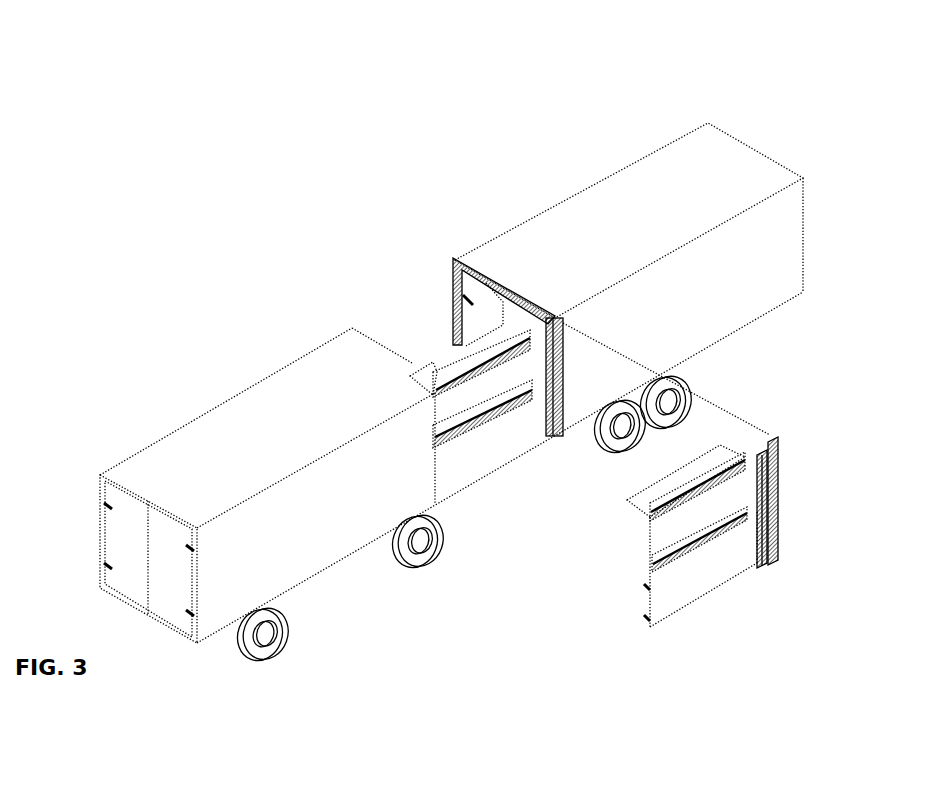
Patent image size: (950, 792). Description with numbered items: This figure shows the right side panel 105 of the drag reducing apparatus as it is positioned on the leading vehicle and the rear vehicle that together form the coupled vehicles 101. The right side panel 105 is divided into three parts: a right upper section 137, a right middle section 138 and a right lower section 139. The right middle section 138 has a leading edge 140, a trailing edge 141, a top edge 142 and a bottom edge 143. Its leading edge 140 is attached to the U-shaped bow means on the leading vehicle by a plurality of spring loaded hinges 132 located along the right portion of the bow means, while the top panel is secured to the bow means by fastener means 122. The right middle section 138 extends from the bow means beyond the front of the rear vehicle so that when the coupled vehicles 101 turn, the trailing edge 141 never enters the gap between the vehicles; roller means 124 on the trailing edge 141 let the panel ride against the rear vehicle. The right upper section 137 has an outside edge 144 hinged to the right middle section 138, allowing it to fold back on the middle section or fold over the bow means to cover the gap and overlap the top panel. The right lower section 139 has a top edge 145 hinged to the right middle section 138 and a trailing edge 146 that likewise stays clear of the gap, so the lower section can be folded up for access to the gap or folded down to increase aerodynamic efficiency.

The coupled vehicles 101 is at (53, 93).
The right side panel 105 is at (658, 642).
The fastener means 122 is at (772, 437).
The roller means 124 is at (647, 525).
The spring loaded hinges 132 is at (553, 320).
The right upper section 137 is at (450, 350).
The right middle section 138 is at (447, 418).
The right lower section 139 is at (462, 478).
The leading edge 140 is at (757, 483).
The trailing edge 141 is at (650, 557).
The top edge 142 is at (753, 455).
The bottom edge 143 is at (535, 390).
The outside edge 144 is at (447, 377).
The top edge 145 is at (450, 450).
The trailing edge 146 is at (650, 605).